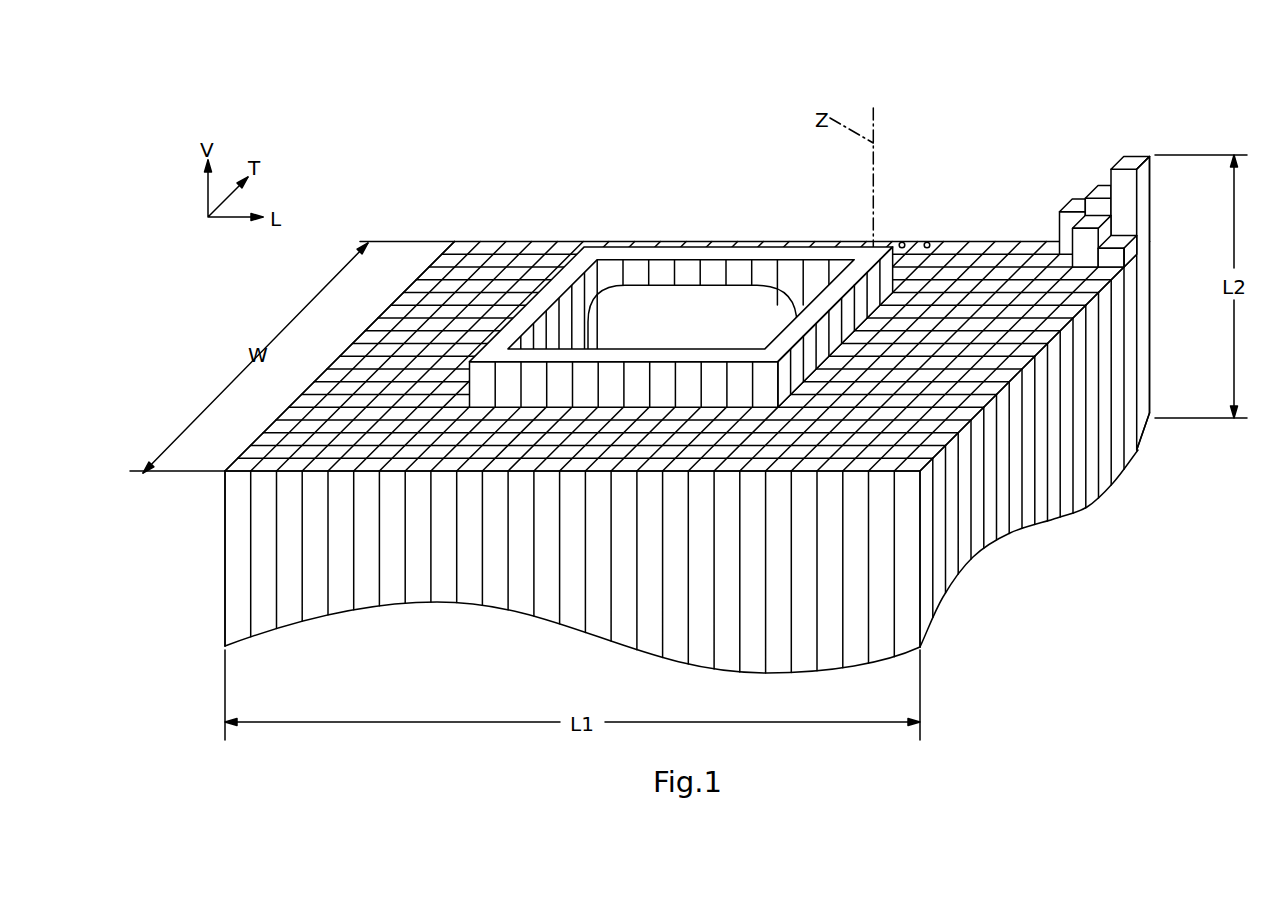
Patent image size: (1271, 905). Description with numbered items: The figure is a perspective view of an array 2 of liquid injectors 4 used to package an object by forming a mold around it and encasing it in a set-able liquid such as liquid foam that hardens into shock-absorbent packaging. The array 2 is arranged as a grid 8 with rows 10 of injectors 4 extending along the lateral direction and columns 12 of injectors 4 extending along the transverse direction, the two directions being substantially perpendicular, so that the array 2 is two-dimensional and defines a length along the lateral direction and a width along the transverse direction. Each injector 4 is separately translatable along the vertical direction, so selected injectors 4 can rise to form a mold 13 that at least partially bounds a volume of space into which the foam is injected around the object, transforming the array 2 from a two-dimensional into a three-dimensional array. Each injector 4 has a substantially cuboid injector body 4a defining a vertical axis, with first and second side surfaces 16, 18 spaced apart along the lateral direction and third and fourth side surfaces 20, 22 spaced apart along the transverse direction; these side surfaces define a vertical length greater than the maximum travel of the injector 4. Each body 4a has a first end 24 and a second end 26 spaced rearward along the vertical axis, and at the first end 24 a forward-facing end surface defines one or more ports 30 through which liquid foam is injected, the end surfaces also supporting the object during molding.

The array 2 is at (448, 172).
The liquid injectors 4 is at (977, 247).
The injector body 4a is at (1155, 322).
The grid 8 is at (577, 238).
The rows 10 is at (436, 262).
The columns 12 is at (511, 240).
The mold 13 is at (827, 283).
The first side surface 16 is at (1125, 168).
The second side surface 18 is at (1148, 273).
The third side surface 20 is at (1125, 193).
The fourth side surface 22 is at (1135, 163).
The first end 24 is at (1143, 152).
The second end 26 is at (1150, 420).
The ports 30 is at (927, 242).